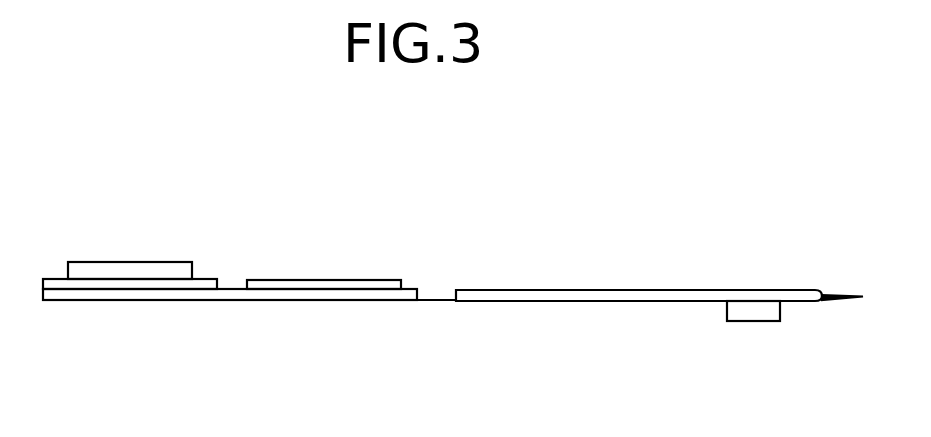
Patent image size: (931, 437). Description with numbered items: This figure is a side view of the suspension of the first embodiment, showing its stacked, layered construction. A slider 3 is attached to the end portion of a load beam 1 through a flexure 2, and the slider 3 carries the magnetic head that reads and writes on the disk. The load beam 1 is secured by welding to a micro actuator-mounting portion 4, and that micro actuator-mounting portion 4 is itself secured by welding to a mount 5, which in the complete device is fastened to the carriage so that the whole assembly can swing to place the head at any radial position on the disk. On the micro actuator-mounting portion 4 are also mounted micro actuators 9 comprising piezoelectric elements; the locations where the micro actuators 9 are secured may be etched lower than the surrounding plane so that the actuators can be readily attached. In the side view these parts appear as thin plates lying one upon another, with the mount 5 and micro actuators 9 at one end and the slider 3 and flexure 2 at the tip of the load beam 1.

The load beam 1 is at (519, 290).
The flexure 2 is at (822, 303).
The slider 3 is at (741, 321).
The micro actuator-mounting portion 4 is at (285, 290).
The mount 5 is at (127, 262).
The micro actuators 9 is at (302, 280).